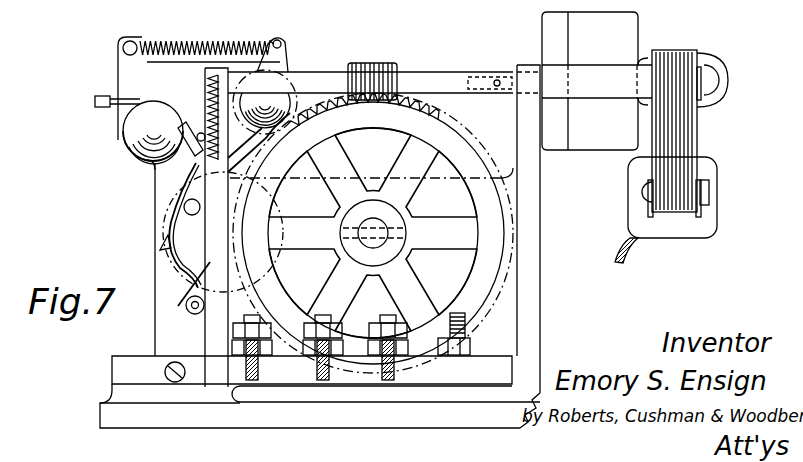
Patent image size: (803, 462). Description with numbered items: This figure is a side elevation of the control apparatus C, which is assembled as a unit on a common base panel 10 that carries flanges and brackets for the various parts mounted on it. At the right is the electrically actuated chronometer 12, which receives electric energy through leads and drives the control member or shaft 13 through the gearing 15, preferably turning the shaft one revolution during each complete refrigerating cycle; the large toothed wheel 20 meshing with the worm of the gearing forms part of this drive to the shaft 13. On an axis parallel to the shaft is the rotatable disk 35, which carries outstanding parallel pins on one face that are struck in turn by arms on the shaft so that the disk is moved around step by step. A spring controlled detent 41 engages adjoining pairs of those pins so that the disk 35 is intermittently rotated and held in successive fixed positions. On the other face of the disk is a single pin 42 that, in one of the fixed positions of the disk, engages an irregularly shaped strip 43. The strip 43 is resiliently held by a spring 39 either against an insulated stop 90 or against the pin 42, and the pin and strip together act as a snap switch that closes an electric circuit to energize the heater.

The base panel 10 is at (167, 417).
The chronometer 12 is at (688, 135).
The control member 13 is at (388, 243).
The gearing 15 is at (400, 100).
The worm gear 20 is at (416, 197).
The rotatable disk 35 is at (176, 252).
The spring 39 is at (214, 121).
The spring controlled detent 41 is at (233, 123).
The pin 42 is at (183, 209).
The irregularly shaped strip 43 is at (196, 160).
The insulated stop 90 is at (193, 316).
The control apparatus C is at (112, 80).